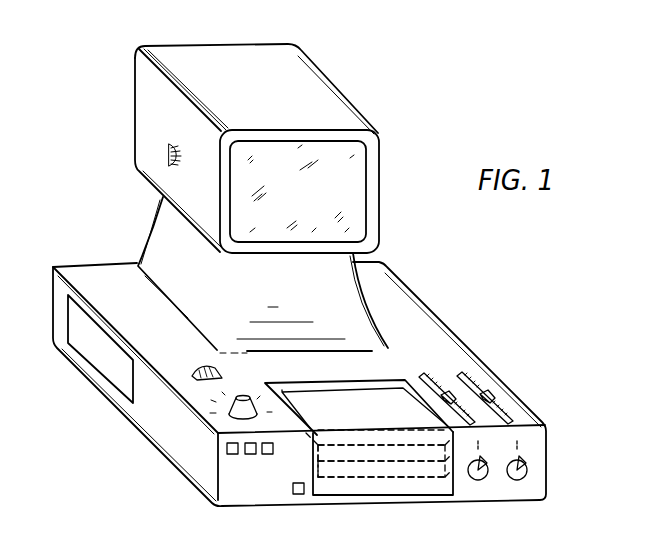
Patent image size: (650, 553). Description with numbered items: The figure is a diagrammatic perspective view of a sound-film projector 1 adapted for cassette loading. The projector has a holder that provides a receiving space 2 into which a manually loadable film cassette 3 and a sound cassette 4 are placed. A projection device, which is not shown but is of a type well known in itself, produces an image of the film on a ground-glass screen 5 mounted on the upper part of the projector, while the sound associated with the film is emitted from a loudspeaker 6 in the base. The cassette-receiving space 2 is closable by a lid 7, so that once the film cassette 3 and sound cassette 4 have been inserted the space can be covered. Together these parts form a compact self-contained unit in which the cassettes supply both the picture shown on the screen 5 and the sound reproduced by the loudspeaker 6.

The data processing apparatus housing 1 is at (437, 308).
The receiving space 2 is at (426, 480).
The film cassette 3 is at (349, 447).
The sound cassette 4 is at (386, 470).
The ground-glass screen 5 is at (347, 160).
The loudspeaker 6 is at (97, 353).
The lid 7 is at (382, 400).